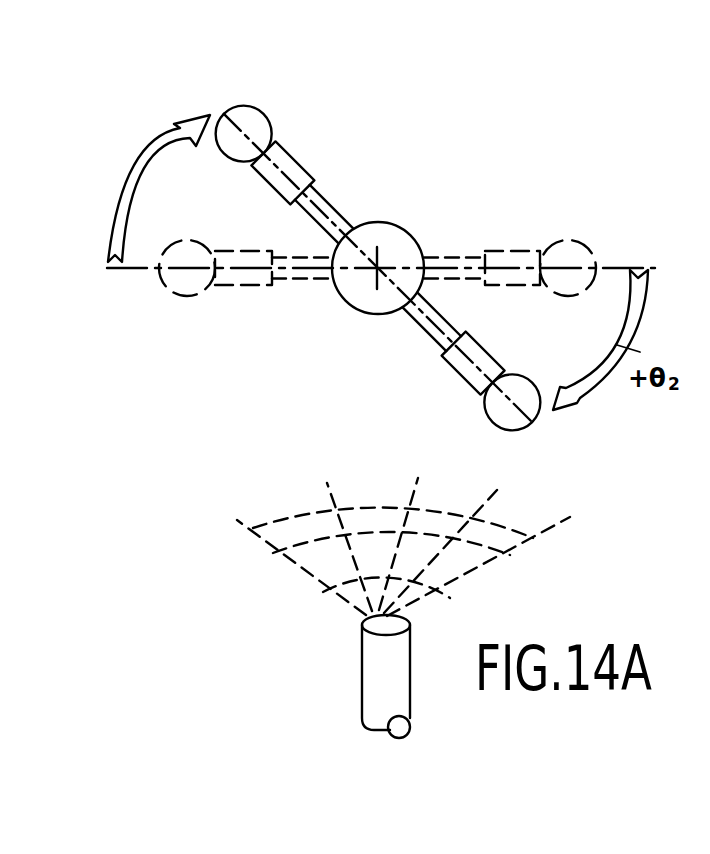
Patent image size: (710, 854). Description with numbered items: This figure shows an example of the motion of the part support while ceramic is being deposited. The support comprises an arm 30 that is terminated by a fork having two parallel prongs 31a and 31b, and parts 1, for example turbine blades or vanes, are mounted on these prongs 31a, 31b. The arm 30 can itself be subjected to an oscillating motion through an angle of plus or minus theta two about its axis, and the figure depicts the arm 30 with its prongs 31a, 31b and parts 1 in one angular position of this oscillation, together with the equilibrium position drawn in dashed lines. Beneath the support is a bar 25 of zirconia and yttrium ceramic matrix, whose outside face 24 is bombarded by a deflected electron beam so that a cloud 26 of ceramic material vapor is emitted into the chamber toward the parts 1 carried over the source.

The part 1 is at (287, 163).
The arm 30 is at (397, 242).
The prong 31a is at (509, 415).
The prong 31b is at (253, 112).
The outside face 24 is at (370, 614).
The bar 25 is at (367, 685).
The cloud 26 is at (308, 575).